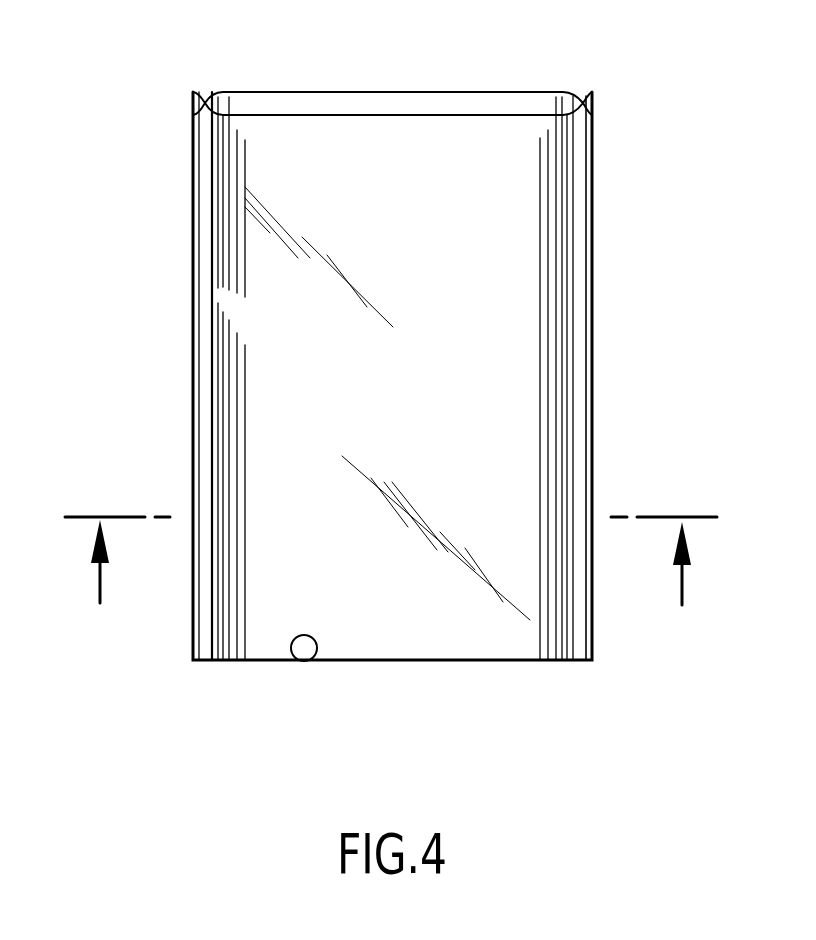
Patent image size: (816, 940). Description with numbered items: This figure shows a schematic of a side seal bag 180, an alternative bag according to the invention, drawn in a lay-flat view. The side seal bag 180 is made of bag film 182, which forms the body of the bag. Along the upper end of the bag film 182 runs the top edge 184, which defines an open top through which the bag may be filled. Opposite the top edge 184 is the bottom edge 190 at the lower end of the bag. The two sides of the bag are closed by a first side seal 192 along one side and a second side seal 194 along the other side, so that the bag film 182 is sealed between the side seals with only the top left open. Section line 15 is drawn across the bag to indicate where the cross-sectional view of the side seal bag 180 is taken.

The side seal bag 180 is at (150, 254).
The bag film 182 is at (518, 171).
The top edge 184 is at (479, 90).
The bottom edge 190 is at (314, 656).
The first side seal 192 is at (207, 396).
The second side seal 194 is at (578, 293).
The section line 15 is at (401, 563).